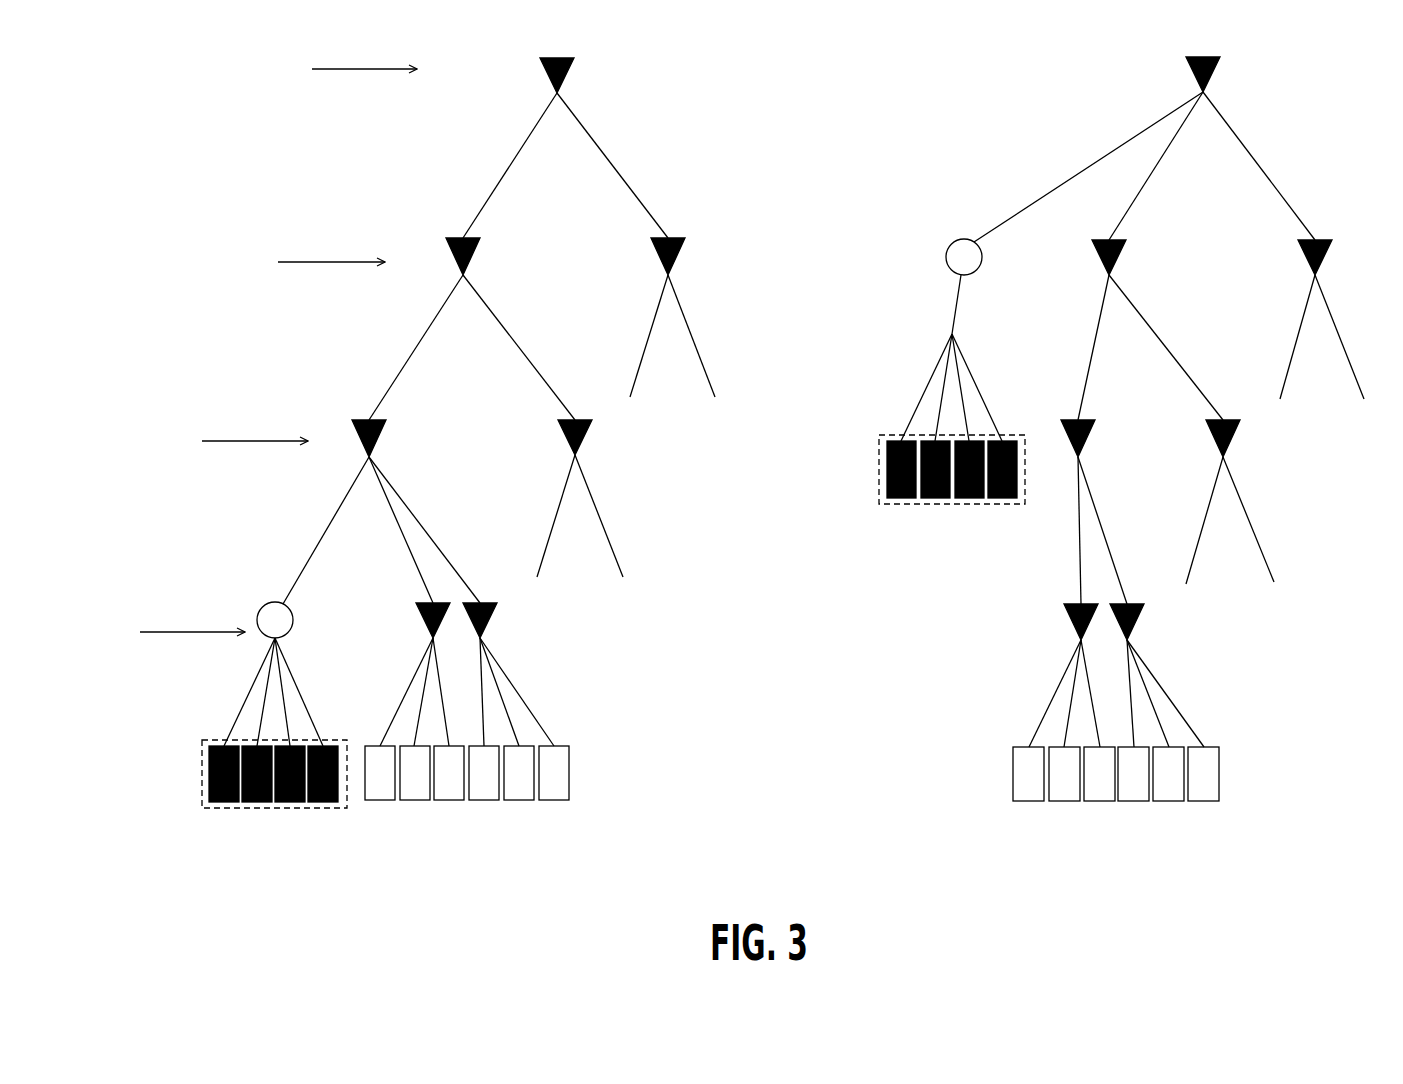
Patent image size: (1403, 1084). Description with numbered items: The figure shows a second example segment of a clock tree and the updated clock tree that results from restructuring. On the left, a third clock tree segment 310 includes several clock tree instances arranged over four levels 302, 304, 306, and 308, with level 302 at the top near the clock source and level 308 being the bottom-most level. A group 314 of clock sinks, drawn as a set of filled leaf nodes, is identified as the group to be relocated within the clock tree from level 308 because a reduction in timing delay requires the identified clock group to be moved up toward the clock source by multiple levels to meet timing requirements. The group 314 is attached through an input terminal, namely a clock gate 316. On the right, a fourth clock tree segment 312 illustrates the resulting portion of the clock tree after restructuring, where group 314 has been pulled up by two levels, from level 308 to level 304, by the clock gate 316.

The level 302 is at (363, 69).
The level 304 is at (330, 262).
The level 306 is at (252, 441).
The level 308 is at (185, 632).
The third clock tree segment 310 is at (250, 50).
The fourth clock tree segment 312 is at (988, 50).
The group 314 is at (297, 810).
The clock gate 316 is at (292, 612).